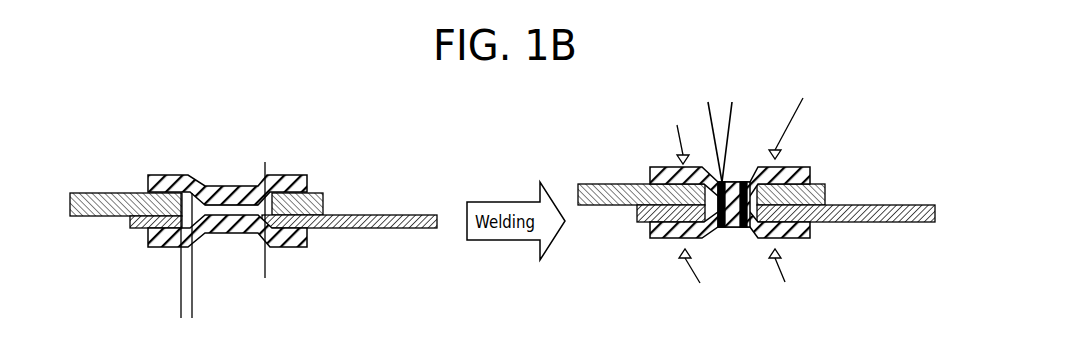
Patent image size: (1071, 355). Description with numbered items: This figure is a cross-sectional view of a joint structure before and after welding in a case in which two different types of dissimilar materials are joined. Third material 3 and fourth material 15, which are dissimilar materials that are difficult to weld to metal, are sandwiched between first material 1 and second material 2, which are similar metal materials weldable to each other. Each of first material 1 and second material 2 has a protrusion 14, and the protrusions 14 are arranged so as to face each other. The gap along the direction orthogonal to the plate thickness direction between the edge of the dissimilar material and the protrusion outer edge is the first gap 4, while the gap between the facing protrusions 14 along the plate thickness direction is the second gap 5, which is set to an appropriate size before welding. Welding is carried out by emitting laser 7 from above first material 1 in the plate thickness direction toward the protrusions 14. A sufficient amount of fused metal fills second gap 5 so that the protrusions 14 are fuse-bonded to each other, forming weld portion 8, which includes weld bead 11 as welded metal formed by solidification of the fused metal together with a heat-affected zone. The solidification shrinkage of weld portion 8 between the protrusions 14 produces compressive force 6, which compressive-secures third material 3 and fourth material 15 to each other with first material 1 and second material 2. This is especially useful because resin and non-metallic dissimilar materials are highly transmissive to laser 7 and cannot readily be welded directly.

The first material 1 is at (298, 175).
The second material 2 is at (150, 237).
The third material 3 is at (92, 192).
The first gap 4 is at (233, 310).
The second gap 5 is at (275, 224).
The compressive force 6 is at (746, 193).
The laser 7 is at (735, 110).
The weld portion 8 is at (728, 182).
The weld bead 11 is at (742, 228).
The protrusion 14 is at (225, 207).
The fourth material 15 is at (132, 225).